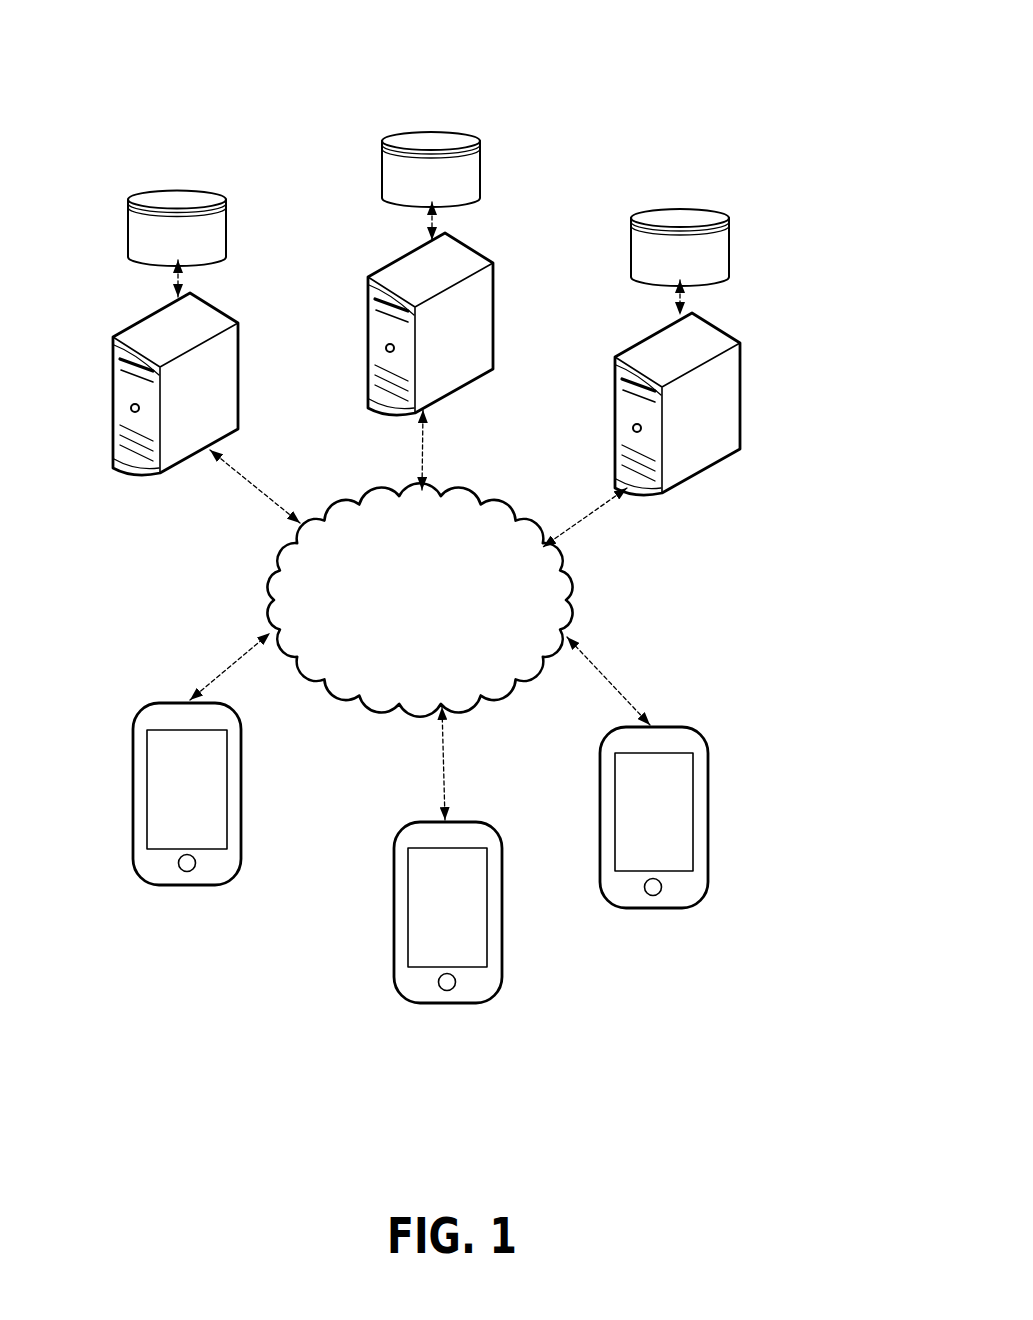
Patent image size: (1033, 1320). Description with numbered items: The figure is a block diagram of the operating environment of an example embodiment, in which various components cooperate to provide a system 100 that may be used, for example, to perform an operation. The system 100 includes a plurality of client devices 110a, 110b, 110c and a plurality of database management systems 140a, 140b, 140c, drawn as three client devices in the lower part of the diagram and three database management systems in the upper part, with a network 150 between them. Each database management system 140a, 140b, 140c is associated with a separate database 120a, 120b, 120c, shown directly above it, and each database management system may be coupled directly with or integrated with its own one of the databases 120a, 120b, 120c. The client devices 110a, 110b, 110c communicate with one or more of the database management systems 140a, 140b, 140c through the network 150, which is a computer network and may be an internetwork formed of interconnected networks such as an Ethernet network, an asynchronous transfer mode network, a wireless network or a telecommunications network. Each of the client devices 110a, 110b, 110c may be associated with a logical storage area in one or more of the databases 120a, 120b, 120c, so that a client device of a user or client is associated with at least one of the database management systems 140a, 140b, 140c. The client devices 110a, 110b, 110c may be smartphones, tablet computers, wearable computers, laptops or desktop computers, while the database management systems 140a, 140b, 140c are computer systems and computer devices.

The system 100 is at (679, 86).
The client device 110a is at (180, 887).
The client device 110b is at (447, 1005).
The client device 110c is at (652, 910).
The database 120a is at (168, 190).
The database 120b is at (422, 130).
The database 120c is at (670, 208).
The database management system 140a is at (238, 322).
The database management system 140b is at (490, 262).
The database management system 140c is at (740, 342).
The network 150 is at (403, 609).